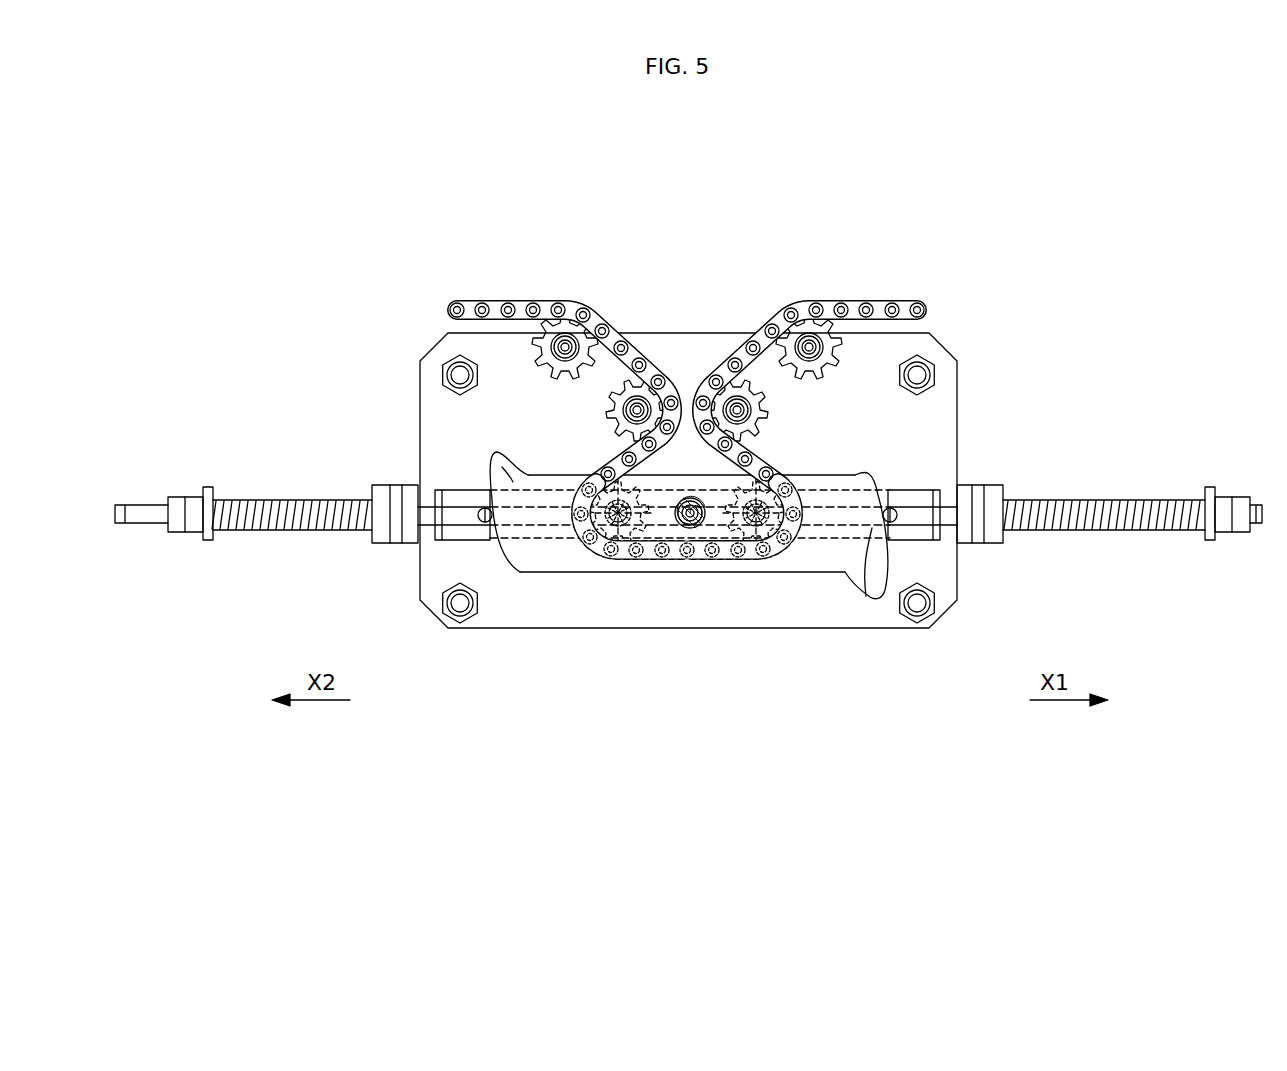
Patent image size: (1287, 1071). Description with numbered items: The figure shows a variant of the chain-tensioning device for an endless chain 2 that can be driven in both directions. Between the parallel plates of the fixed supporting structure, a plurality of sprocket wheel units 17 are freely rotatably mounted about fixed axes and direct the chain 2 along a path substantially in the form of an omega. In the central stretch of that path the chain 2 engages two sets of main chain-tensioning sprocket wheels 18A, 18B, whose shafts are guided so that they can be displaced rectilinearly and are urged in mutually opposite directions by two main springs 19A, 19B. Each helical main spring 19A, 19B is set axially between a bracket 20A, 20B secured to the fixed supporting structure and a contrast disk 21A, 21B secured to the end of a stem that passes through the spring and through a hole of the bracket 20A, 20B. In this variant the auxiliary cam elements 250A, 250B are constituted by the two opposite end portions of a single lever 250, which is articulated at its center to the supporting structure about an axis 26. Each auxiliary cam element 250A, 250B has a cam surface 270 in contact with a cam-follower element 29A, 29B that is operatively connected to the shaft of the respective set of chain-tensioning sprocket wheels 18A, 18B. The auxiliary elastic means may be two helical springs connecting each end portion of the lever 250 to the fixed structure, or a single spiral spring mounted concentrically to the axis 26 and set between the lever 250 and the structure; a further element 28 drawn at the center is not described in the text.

The chain 2 is at (491, 268).
The sprocket wheel units 17 is at (526, 353).
The set of main chain-tensioning sprocket wheels 18A is at (757, 550).
The set of main chain-tensioning sprocket wheels 18B is at (618, 550).
The main spring 19A is at (1150, 527).
The main spring 19B is at (280, 527).
The bracket 20A is at (998, 528).
The bracket 20B is at (385, 520).
The contrast disk 21A is at (1212, 540).
The contrast disk 21B is at (208, 540).
The axis of articulation 26 is at (682, 500).
The shaft 28 is at (709, 540).
The cam-follower element 29A is at (890, 508).
The cam-follower element 29B is at (483, 523).
The lever 250 is at (547, 582).
The auxiliary cam element 250A is at (870, 598).
The auxiliary cam element 250B is at (512, 482).
The cam surface 270 is at (501, 560).